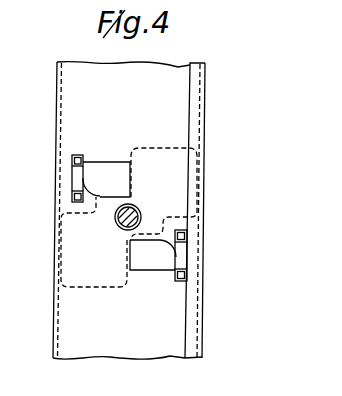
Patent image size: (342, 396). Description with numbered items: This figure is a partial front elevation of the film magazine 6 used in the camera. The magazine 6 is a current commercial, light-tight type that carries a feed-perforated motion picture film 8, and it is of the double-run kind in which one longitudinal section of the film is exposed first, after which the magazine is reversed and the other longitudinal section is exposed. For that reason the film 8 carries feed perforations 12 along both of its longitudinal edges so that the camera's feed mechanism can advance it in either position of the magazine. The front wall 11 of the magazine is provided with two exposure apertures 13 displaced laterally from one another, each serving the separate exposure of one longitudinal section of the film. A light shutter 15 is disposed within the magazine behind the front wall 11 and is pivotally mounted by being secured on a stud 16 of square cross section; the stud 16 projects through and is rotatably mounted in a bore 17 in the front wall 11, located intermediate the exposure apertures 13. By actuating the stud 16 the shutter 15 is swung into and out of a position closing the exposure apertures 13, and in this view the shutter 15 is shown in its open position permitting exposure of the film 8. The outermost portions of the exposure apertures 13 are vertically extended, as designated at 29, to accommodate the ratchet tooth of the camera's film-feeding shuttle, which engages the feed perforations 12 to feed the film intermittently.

The film magazine 6 is at (178, 64).
The motion picture film 8 is at (110, 173).
The front wall 11 is at (176, 110).
The feed perforations 12 is at (72, 161).
The exposure apertures 13 is at (84, 181).
The light shutter 15 is at (190, 142).
The stud 16 is at (138, 210).
The bore 17 is at (120, 228).
The vertically extended portions of the exposure apertures 29 is at (78, 156).